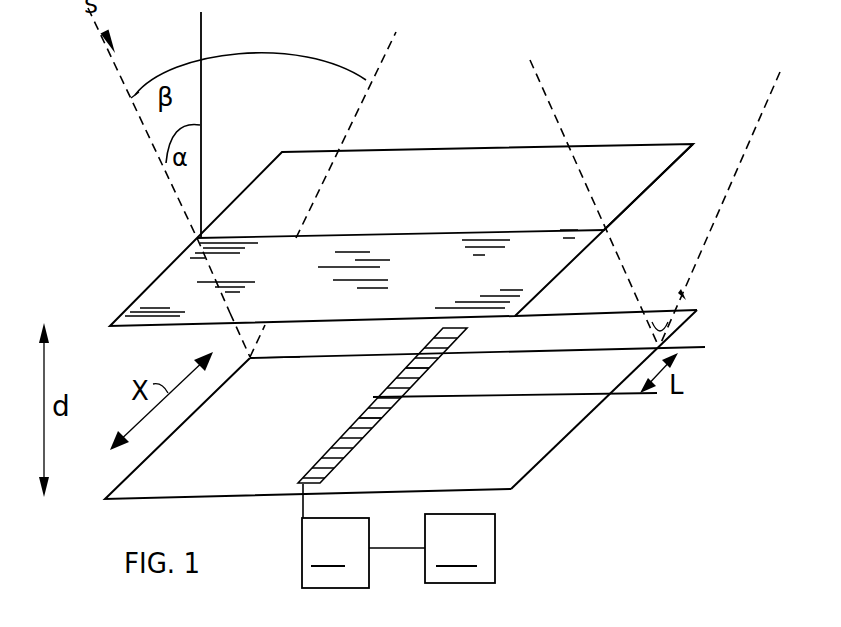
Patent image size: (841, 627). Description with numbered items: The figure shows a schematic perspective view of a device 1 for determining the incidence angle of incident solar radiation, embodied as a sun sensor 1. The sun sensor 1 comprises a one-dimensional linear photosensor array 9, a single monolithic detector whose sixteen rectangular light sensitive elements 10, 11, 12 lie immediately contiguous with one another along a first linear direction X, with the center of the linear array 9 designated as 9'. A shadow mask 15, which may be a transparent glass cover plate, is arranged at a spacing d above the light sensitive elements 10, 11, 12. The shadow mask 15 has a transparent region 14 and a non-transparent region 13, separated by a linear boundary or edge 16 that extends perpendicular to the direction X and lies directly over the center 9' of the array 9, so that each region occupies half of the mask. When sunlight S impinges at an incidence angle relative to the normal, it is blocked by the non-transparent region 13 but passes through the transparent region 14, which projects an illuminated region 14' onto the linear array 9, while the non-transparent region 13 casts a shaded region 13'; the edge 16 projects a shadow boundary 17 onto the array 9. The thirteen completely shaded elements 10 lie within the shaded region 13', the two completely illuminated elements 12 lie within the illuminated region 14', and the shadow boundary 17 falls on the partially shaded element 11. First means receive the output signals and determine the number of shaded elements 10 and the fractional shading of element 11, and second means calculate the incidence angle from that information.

The sun sensor 1 is at (705, 407).
The linear photosensor array 9 is at (368, 531).
The center of the linear array 9' is at (403, 357).
The completely shaded light sensitive elements 10 is at (375, 430).
The partially shaded light sensitive element 11 is at (443, 358).
The completely illuminated light sensitive elements 12 is at (452, 326).
The non-transparent region 13 is at (606, 296).
The shaded region 13' is at (362, 428).
The transparent region 14 is at (648, 193).
The illuminated region 14' is at (631, 391).
The shadow mask 15 is at (140, 264).
The linear boundary 16 is at (396, 233).
The shadow boundary 17 is at (308, 354).